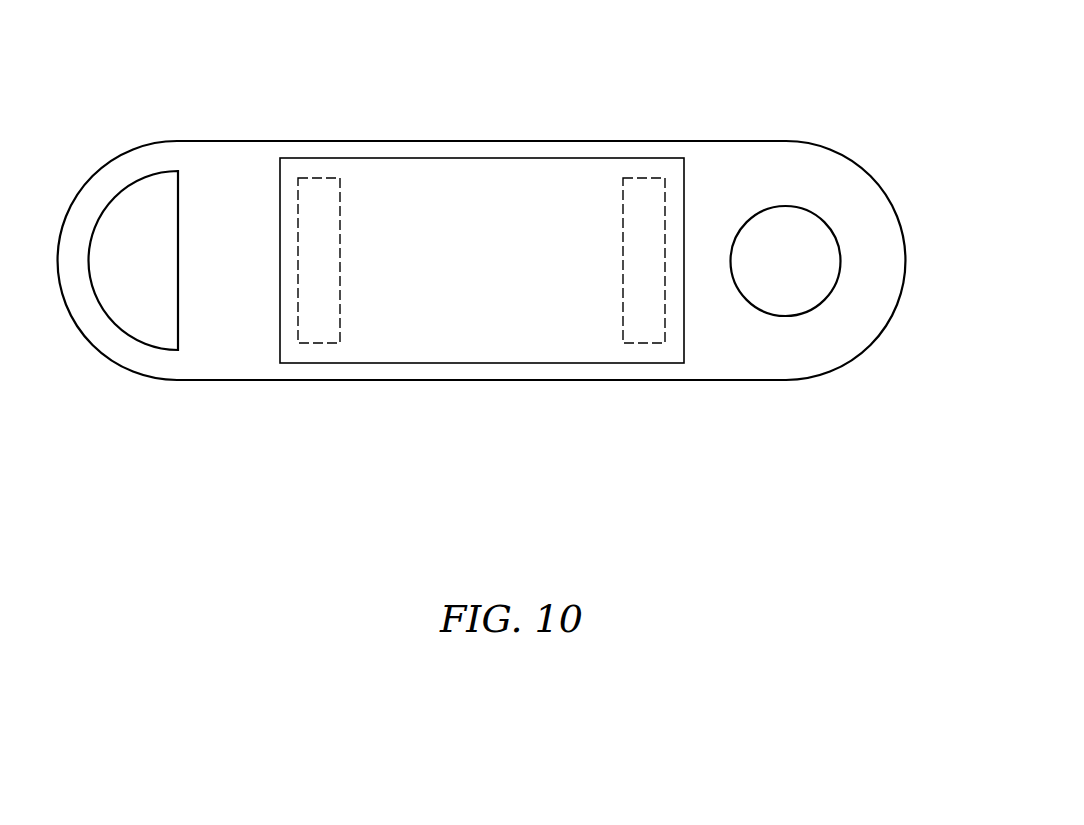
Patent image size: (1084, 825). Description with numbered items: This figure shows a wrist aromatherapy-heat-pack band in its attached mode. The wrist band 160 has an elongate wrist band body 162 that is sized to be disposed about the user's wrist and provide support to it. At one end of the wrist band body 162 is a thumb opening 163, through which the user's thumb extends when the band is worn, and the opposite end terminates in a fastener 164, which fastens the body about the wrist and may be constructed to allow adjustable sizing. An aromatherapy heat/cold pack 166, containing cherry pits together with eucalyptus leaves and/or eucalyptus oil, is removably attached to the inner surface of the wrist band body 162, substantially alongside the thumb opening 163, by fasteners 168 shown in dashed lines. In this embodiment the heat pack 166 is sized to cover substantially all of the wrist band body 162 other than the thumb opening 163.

The wrist band 160 is at (565, 67).
The wrist band body 162 is at (747, 152).
The thumb opening 163 is at (825, 246).
The fastener 164 is at (139, 323).
The aromatherapy heat/cold pack 166 is at (507, 348).
The fasteners 168 is at (322, 335).